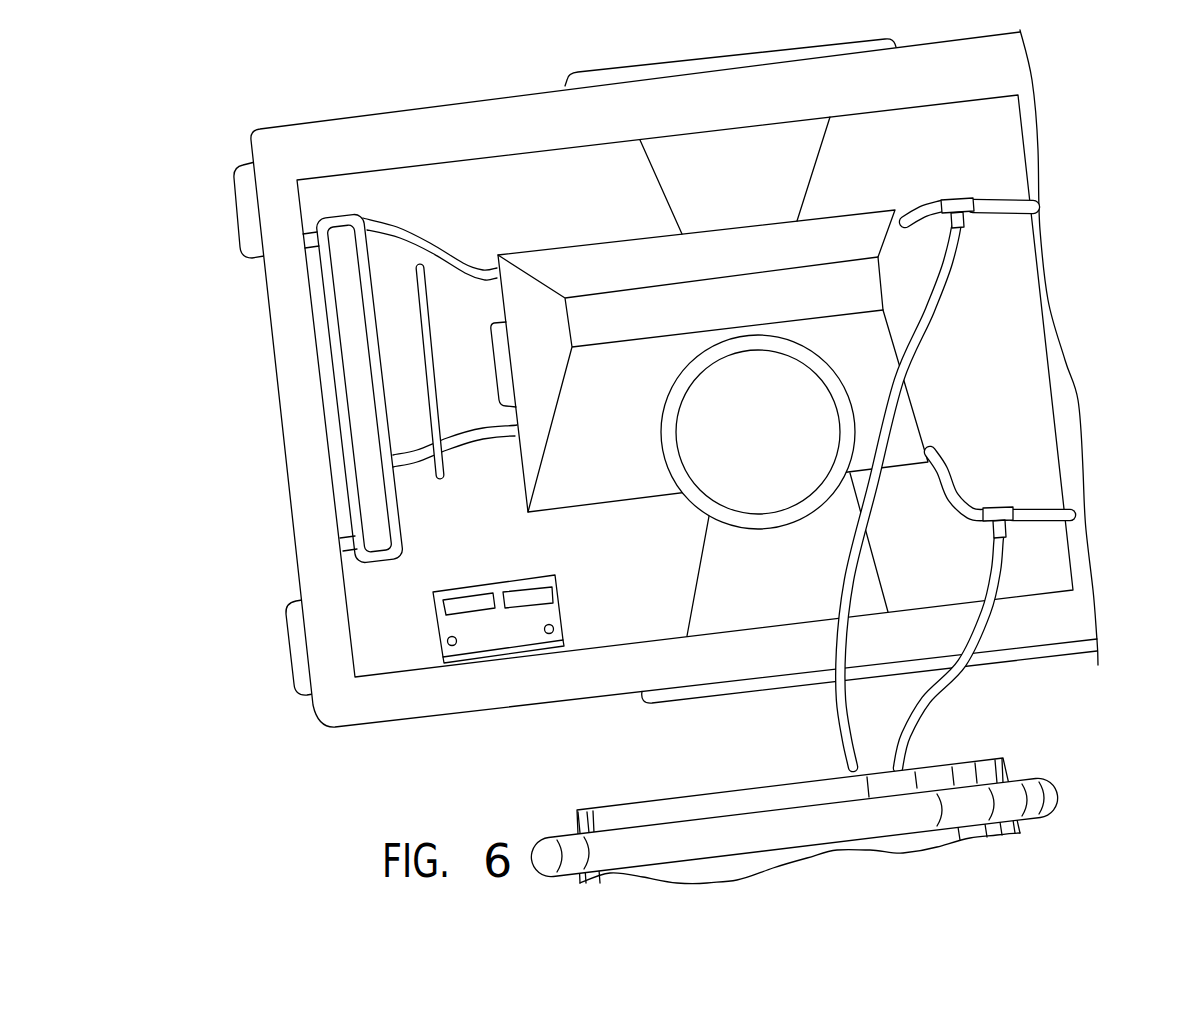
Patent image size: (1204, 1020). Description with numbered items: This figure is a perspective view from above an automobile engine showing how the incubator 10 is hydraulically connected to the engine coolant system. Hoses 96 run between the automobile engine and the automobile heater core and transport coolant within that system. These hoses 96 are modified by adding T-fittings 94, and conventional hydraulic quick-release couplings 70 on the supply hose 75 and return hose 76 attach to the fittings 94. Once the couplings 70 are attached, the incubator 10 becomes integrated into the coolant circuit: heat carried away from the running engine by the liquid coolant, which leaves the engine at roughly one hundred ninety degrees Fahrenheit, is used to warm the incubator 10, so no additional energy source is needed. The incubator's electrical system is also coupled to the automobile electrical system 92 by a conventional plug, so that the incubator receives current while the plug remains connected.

The incubator 10 is at (1077, 767).
The hydraulic quick-release coupling 70 is at (966, 226).
The supply hose 75 is at (938, 692).
The return hose 76 is at (834, 707).
The automobile electrical system 92 is at (423, 640).
The T-fitting 94 is at (955, 194).
The hose 96 is at (927, 202).